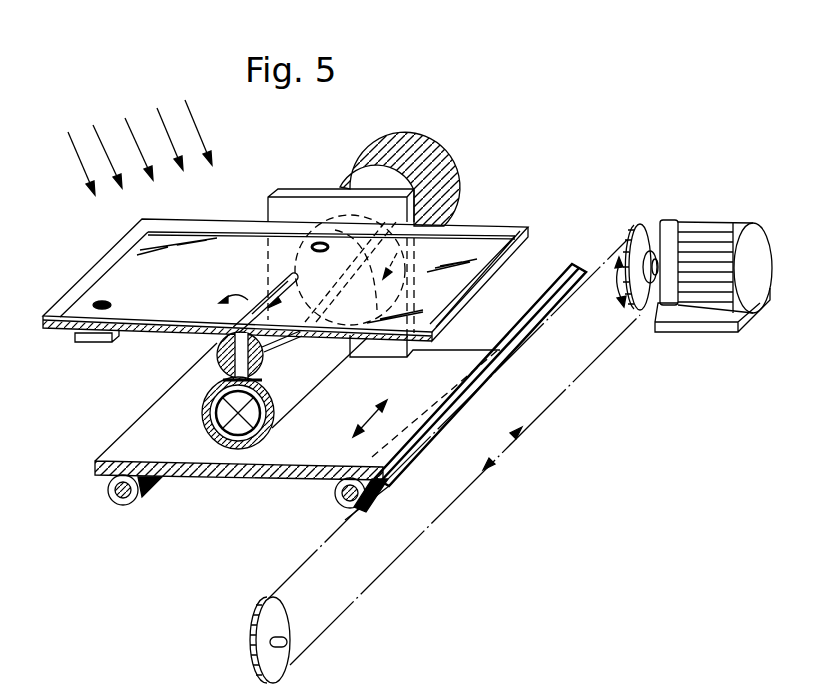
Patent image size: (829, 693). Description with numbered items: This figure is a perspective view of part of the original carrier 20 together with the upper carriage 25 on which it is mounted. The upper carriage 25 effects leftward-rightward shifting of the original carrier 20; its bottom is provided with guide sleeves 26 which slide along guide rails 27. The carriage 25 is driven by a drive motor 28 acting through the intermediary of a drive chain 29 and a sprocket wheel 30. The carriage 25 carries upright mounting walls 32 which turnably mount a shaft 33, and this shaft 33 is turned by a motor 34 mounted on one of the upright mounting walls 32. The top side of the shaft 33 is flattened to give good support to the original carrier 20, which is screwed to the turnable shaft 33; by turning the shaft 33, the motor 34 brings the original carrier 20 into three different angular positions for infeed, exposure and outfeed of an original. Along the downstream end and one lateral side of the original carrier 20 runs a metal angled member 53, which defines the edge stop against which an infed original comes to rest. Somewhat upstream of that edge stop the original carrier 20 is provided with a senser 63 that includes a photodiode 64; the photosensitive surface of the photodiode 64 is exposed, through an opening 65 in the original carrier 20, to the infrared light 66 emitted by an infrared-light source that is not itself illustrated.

The original carrier 20 is at (497, 250).
The upper carriage 25 is at (300, 456).
The guide sleeves 26 is at (130, 505).
The guide rails 27 is at (570, 268).
The drive motor 28 is at (695, 228).
The drive chain 29 is at (545, 412).
The sprocket wheel 30 is at (277, 667).
The upright mounting walls 32 is at (300, 198).
The shaft 33 is at (217, 358).
The motor 34 is at (373, 166).
The angled member 53 is at (474, 229).
The senser 63 is at (98, 343).
The photodiode 64 is at (100, 302).
The opening 65 is at (108, 303).
The infrared light 66 is at (130, 136).